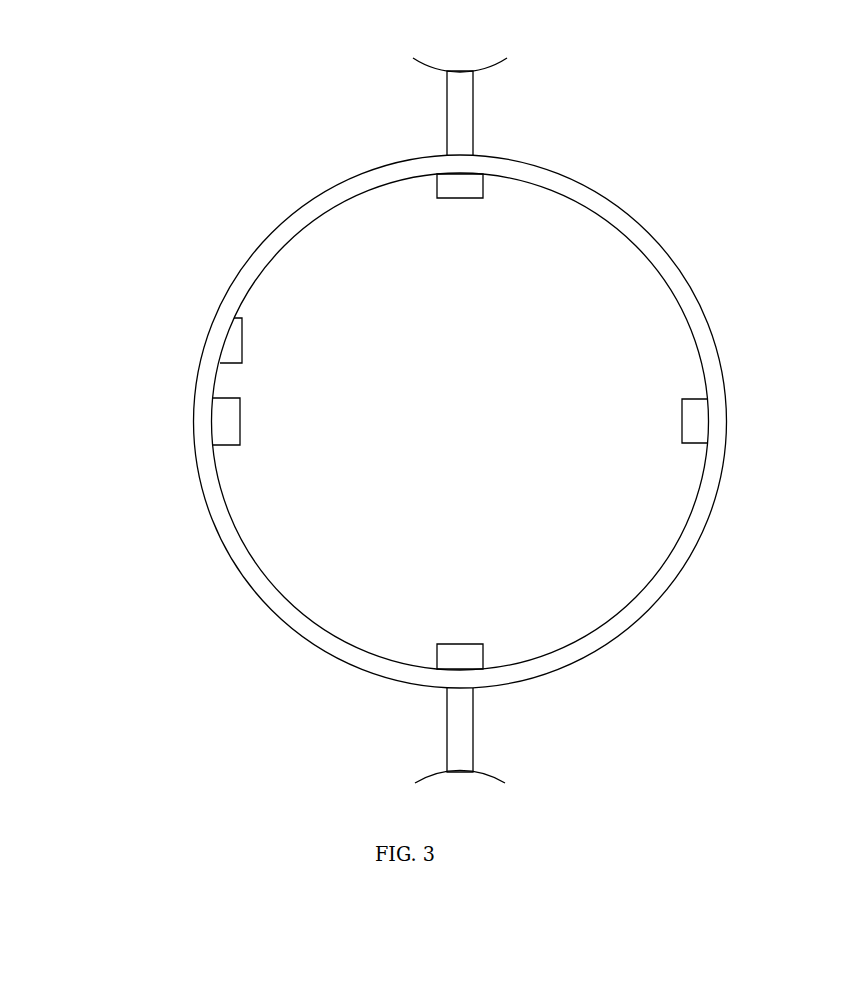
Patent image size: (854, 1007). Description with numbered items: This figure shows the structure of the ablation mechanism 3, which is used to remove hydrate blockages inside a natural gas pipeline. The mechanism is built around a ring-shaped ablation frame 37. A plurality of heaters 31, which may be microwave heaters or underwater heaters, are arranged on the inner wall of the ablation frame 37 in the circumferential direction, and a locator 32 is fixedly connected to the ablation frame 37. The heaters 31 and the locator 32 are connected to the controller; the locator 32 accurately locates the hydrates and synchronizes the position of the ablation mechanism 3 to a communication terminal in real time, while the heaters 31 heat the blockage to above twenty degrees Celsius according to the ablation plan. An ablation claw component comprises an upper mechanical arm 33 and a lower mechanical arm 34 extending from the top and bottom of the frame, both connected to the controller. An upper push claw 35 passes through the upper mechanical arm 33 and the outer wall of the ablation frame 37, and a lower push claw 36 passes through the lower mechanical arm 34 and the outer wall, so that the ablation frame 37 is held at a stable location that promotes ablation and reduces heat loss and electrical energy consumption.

The ablation mechanism 3 is at (293, 215).
The heater 31 is at (224, 422).
The locator 32 is at (242, 352).
The upper mechanical arm 33 is at (447, 128).
The lower mechanical arm 34 is at (447, 730).
The upper push claw 35 is at (490, 70).
The lower push claw 36 is at (492, 772).
The ablation frame 37 is at (220, 537).